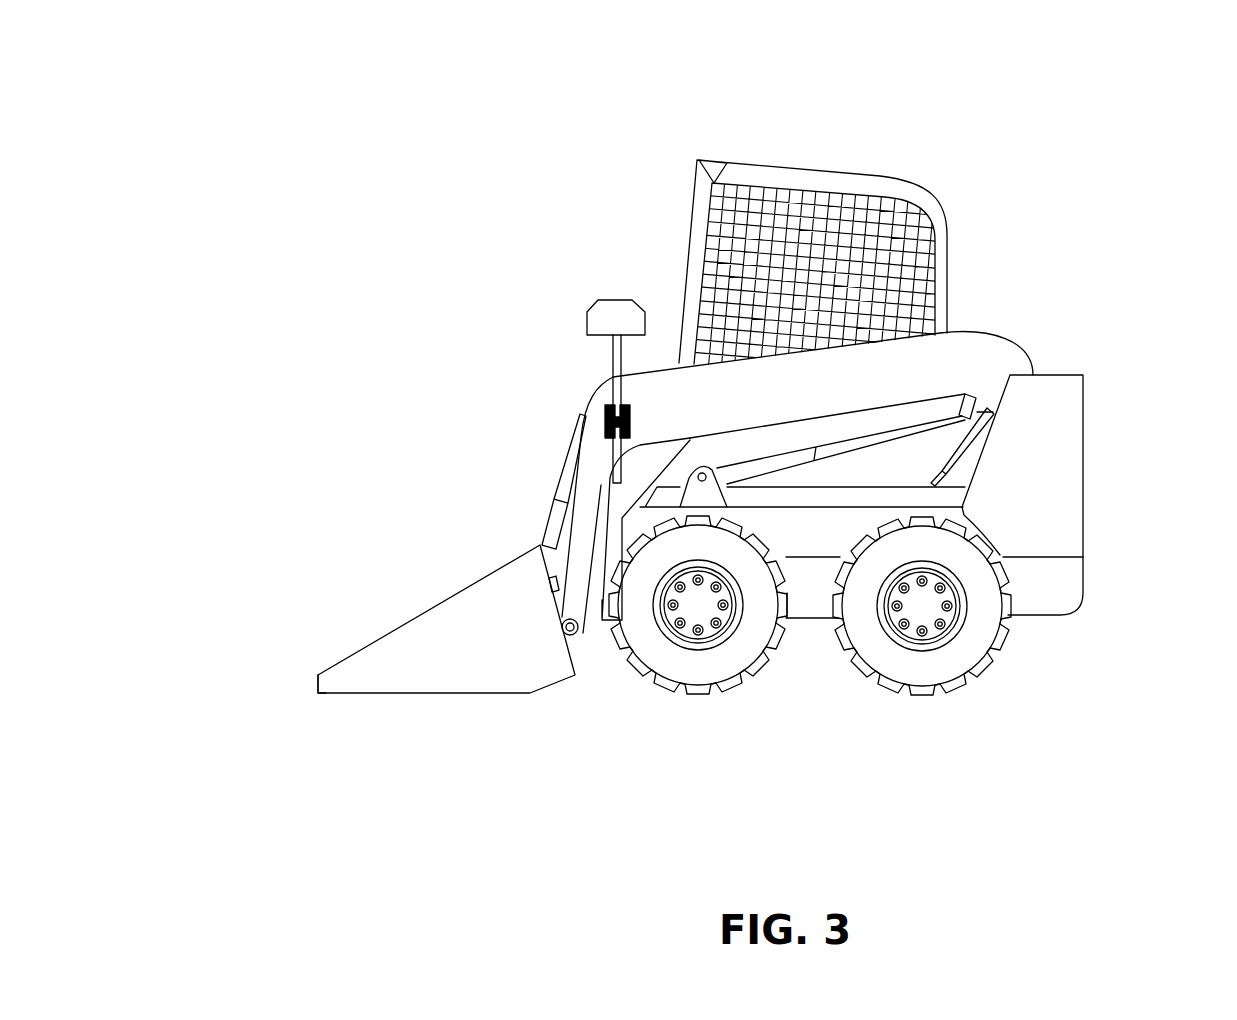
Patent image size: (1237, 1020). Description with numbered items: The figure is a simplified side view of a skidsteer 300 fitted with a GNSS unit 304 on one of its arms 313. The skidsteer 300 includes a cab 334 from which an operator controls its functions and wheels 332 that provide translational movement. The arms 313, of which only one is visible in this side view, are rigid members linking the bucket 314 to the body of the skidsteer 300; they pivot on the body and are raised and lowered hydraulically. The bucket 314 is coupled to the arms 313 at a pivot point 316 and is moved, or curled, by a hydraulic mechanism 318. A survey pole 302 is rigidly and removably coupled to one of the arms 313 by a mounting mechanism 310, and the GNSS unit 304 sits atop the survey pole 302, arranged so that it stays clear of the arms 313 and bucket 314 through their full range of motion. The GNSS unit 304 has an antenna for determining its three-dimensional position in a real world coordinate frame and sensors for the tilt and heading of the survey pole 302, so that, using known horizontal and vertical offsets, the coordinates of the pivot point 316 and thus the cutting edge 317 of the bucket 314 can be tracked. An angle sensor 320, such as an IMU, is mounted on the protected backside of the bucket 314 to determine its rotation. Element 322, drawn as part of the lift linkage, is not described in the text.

The skidsteer 300 is at (1066, 96).
The survey pole 302 is at (609, 353).
The GNSS unit 304 is at (600, 312).
The mounting mechanism 310 is at (601, 413).
The arm 313 is at (985, 350).
The bucket 314 is at (428, 683).
The pivot point 316 is at (580, 635).
The cutting edge 317 is at (318, 690).
The hydraulic mechanism 318 is at (565, 498).
The angle sensor 320 is at (553, 577).
The lift cylinder 322 is at (957, 445).
The wheels 332 is at (977, 632).
The cab 334 is at (863, 182).